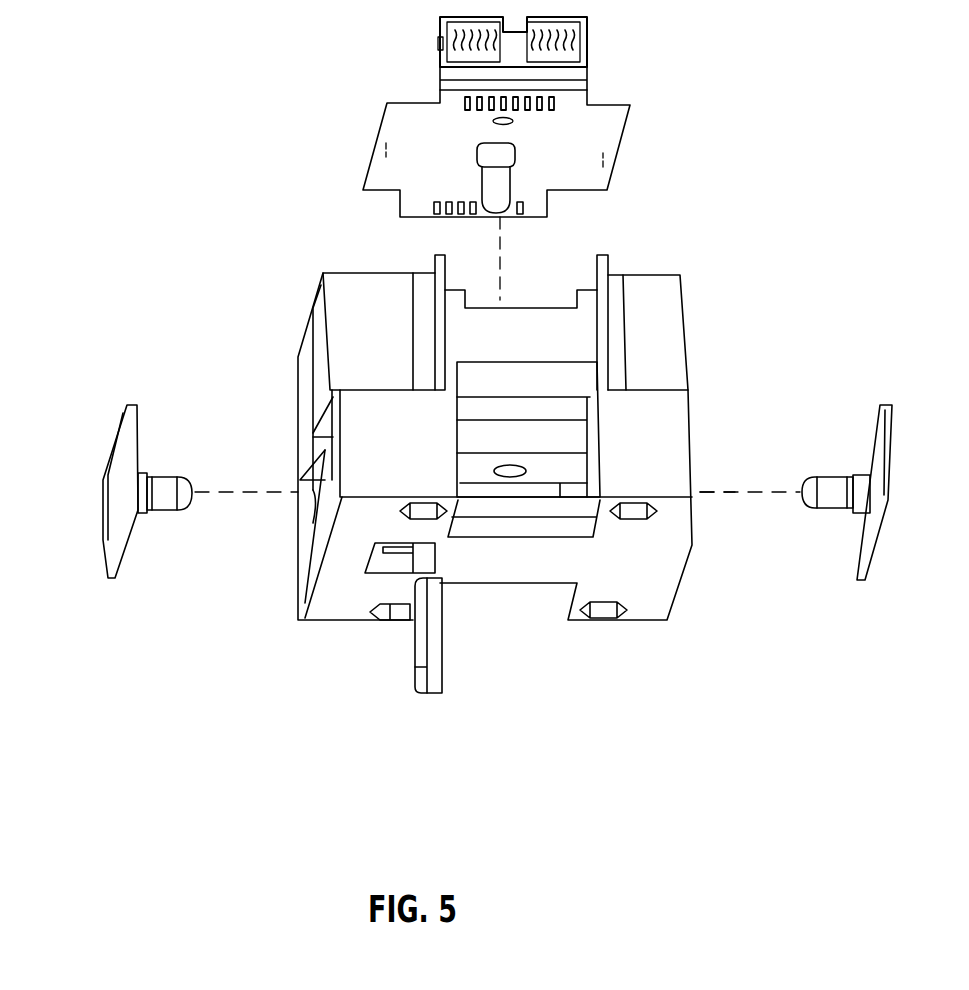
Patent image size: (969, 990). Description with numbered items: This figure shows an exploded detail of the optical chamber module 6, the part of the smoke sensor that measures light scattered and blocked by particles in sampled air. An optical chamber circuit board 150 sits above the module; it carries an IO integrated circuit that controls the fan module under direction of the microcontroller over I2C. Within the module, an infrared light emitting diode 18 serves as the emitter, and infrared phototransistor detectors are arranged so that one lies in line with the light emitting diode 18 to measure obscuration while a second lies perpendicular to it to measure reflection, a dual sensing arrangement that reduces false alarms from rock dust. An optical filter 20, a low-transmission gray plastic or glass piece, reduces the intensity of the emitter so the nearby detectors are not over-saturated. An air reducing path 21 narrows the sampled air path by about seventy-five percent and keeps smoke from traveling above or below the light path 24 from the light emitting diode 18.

The optical chamber circuit board 150 is at (617, 100).
The optical chamber module 6 is at (577, 322).
The light emitting diode 18 is at (818, 463).
The optical filter 20 is at (407, 650).
The air reducing path 21 is at (525, 507).
The light path 24 is at (735, 493).